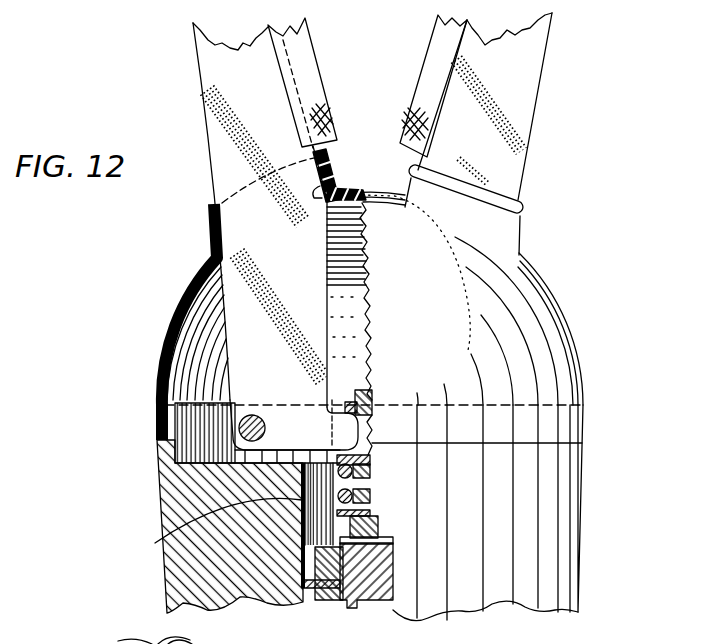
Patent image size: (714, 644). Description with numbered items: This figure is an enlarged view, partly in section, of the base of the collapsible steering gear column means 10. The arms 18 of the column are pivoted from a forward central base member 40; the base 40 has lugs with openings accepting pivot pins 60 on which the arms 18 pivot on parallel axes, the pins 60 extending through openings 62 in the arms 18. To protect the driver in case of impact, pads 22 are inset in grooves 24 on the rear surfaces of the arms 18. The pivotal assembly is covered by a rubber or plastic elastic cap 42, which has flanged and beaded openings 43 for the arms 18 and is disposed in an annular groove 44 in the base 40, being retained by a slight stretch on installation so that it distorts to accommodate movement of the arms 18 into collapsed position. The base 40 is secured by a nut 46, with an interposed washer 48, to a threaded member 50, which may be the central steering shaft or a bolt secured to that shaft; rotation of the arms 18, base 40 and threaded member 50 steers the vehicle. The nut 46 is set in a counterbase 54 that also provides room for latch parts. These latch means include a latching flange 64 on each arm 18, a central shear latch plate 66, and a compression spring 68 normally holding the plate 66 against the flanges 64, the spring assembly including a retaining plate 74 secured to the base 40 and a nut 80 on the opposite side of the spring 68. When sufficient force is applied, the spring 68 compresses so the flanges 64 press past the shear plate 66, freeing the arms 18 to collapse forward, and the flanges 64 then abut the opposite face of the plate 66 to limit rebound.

The steering gear column means 10 is at (575, 318).
The arms 18 is at (271, 144).
The pads 22 is at (310, 87).
The grooves 24 is at (282, 70).
The base member 40 is at (471, 516).
The elastic cap 42 is at (409, 291).
The flanged and beaded openings 43 is at (332, 183).
The annular groove 44 is at (156, 434).
The nut 46 is at (332, 567).
The washer 48 is at (315, 582).
The threaded member 50 is at (356, 563).
The counterbase 54 is at (212, 527).
The pivot pins 60 is at (266, 432).
The openings 62 is at (254, 416).
The latching flange 64 is at (378, 410).
The central shear latch plate 66 is at (351, 400).
The compression spring 68 is at (362, 488).
The retaining plate 74 is at (353, 461).
The nut 80 is at (367, 528).